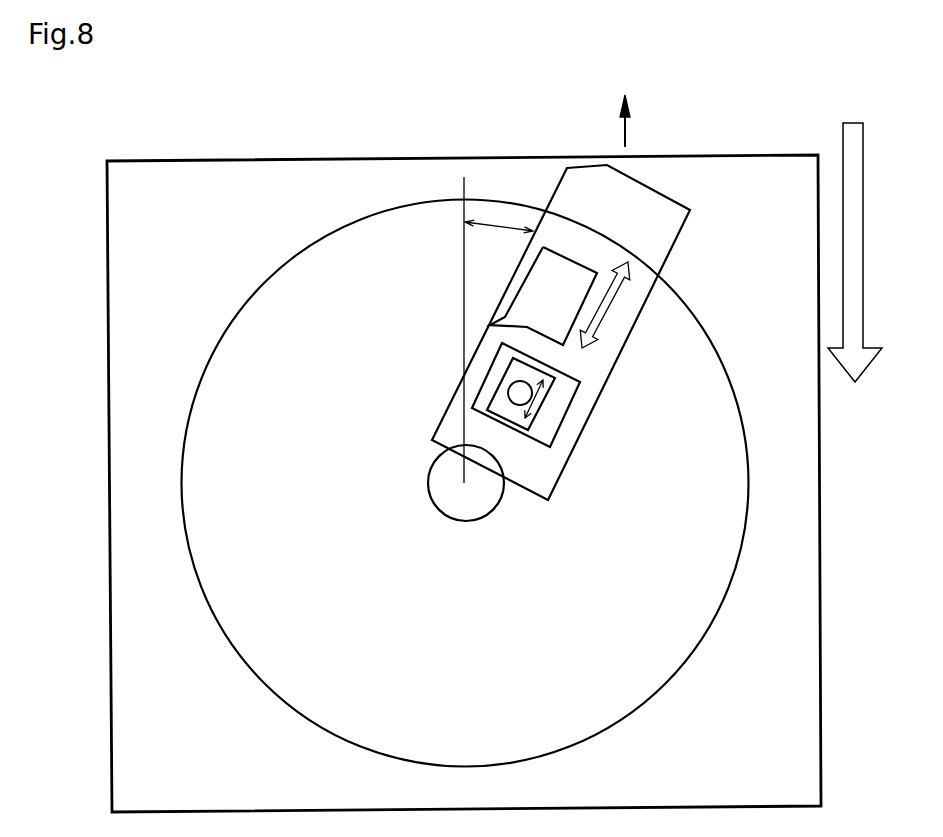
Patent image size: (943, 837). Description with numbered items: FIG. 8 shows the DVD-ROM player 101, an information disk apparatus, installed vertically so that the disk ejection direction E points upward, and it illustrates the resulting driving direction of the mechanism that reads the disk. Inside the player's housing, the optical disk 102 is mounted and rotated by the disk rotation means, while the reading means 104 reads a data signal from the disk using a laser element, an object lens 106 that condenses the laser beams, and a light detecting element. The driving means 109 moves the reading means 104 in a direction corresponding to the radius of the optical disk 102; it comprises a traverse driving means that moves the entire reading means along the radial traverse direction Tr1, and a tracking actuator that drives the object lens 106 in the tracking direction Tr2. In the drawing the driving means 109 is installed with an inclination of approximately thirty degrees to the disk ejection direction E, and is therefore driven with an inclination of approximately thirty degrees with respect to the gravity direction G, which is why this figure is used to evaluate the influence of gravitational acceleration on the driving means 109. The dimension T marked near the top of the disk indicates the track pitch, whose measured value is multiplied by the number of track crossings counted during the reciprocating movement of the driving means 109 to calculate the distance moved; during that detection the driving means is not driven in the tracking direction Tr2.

The DVD-ROM player 101 is at (247, 161).
The optical disk 102 is at (722, 612).
The reading means 104 is at (593, 382).
The object lens 106 is at (510, 392).
The driving means 109 is at (690, 212).
The traverse direction Tr1 is at (620, 293).
The tracking direction Tr2 is at (532, 410).
The track pitch T is at (499, 222).
The disk ejection direction E is at (634, 121).
The gravity direction G is at (855, 238).